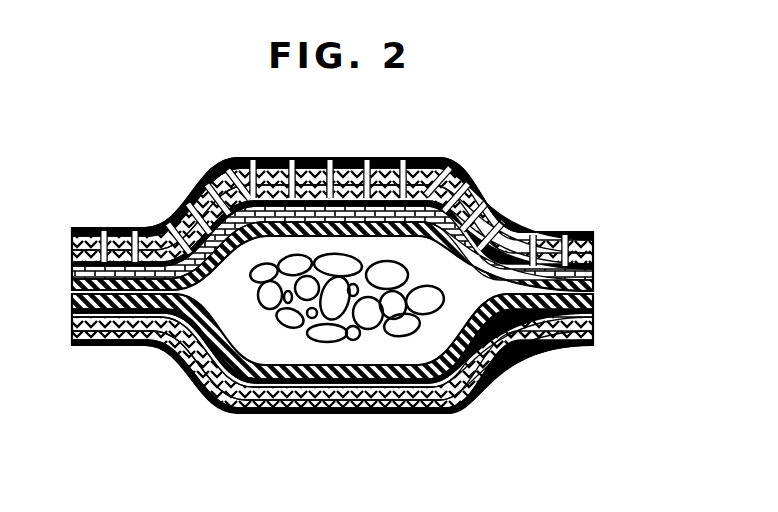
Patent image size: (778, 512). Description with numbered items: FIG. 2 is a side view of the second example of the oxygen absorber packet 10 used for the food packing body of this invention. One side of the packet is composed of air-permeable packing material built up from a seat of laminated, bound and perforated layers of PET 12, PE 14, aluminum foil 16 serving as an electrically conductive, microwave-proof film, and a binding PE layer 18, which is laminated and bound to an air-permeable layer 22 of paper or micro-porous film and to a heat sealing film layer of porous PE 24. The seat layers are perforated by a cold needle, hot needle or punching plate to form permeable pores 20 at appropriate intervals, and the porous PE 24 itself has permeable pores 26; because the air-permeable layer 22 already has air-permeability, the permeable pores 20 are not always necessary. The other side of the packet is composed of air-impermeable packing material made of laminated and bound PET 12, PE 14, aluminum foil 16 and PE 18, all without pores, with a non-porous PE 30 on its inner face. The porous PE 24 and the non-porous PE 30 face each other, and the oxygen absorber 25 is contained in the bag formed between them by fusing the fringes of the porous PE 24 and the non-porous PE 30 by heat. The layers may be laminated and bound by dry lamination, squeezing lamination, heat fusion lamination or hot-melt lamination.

The bag body 10 is at (226, 143).
The PET film 12 is at (593, 233).
The PE film 14 is at (593, 244).
The electrically conductive film 16 is at (593, 254).
The binding film layer 18 is at (593, 265).
The permeable pores 20 is at (428, 158).
The air-permeable layer 22 is at (593, 277).
The heat sealing film layer 24 is at (593, 288).
The oxygen absorber 25 is at (403, 333).
The permeable pores 26 is at (313, 160).
The non-porous PE 30 is at (593, 305).